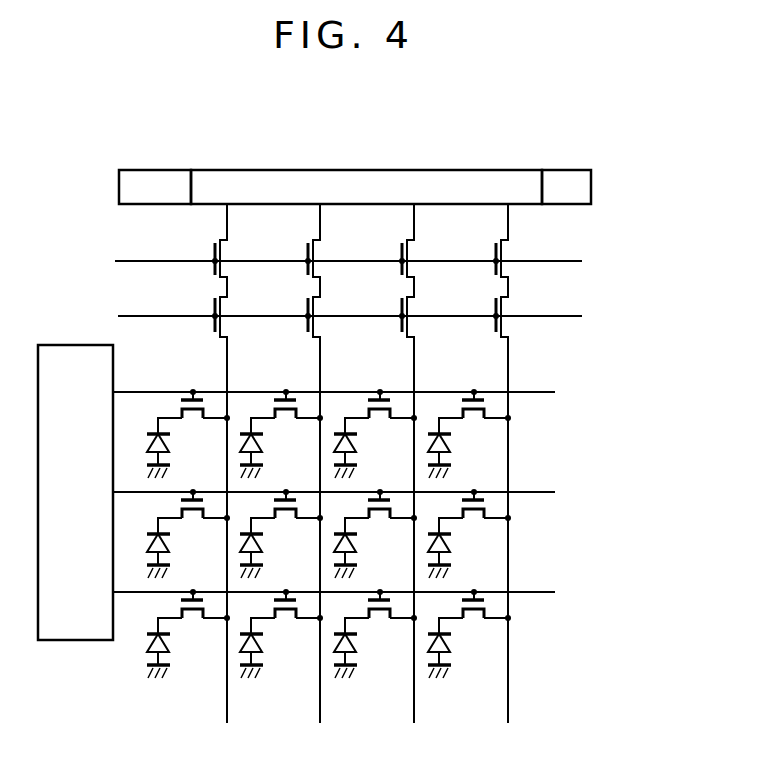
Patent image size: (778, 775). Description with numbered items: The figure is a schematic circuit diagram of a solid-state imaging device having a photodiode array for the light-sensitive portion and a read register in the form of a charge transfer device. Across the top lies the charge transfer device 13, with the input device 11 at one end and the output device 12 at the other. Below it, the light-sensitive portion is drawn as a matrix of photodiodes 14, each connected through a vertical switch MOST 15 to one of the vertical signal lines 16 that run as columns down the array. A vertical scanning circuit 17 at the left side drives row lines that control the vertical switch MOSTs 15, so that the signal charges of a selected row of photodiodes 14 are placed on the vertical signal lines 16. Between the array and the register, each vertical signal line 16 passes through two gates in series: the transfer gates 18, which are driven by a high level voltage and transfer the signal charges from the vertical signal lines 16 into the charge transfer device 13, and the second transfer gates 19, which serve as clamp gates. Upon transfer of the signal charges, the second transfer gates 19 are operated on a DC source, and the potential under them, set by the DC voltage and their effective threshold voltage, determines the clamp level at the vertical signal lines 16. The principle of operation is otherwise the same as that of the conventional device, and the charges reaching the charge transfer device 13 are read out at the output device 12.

The input device 11 is at (130, 170).
The output device 12 is at (558, 170).
The charge transfer device 13 is at (290, 170).
The photodiodes 14 is at (450, 545).
The vertical switch MOSTs 15 is at (487, 506).
The vertical signal lines 16 is at (508, 457).
The vertical scanning circuit 17 is at (75, 640).
The transfer gates 18 is at (606, 232).
The second transfer gates 19 is at (606, 293).